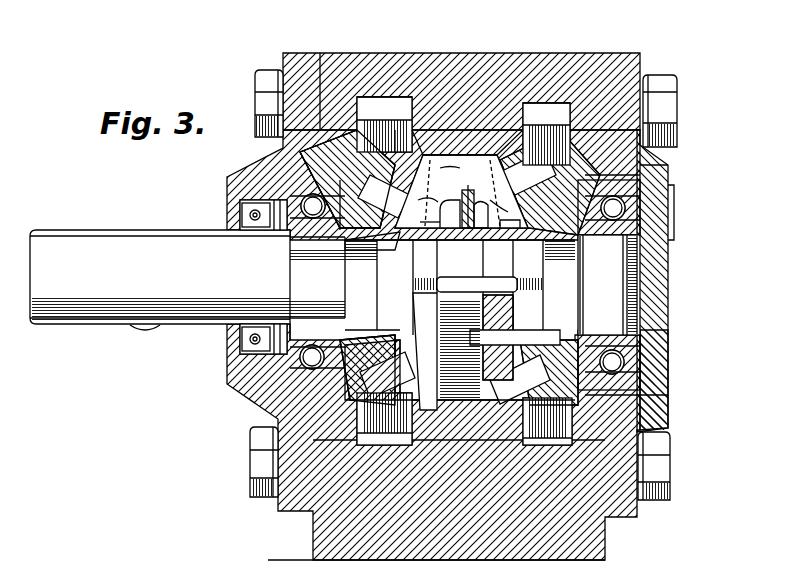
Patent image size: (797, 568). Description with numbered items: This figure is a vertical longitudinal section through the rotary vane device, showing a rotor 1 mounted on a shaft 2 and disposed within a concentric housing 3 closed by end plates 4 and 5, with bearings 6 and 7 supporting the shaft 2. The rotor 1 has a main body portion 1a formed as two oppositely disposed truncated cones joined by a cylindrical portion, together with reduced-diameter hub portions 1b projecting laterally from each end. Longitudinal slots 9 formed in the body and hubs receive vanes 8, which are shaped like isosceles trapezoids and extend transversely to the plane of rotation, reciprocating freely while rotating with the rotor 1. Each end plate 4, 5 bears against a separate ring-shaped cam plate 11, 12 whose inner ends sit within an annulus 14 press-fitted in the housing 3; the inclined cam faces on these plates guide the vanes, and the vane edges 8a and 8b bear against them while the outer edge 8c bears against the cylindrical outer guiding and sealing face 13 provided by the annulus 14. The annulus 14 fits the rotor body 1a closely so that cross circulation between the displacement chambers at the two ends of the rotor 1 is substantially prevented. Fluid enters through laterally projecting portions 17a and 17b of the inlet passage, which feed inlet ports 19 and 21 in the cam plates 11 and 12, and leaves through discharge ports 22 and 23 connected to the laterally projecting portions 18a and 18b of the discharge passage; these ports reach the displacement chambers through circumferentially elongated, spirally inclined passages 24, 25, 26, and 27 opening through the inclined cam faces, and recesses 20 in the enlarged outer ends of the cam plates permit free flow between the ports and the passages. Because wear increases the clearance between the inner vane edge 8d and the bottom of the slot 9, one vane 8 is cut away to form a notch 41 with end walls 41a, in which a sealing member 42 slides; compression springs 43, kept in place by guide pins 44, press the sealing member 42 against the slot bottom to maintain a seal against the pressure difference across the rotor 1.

The rotor 1 is at (560, 310).
The main body portion 1a is at (582, 276).
The hub portions 1b is at (640, 262).
The shaft 2 is at (105, 252).
The housing 3 is at (590, 70).
The end plate 4 is at (293, 92).
The end plate 5 is at (660, 140).
The bearing 6 is at (300, 205).
The bearing 7 is at (598, 232).
The vanes 8 is at (486, 343).
The guiding and sealing edge 8a is at (428, 191).
The guiding and sealing edge 8b is at (499, 200).
The outer guiding and sealing edge 8c is at (450, 170).
The inner edge 8d is at (425, 212).
The longitudinal slots 9 is at (362, 262).
The cam plate 11 is at (372, 130).
The cam plate 12 is at (540, 112).
The outer guiding and sealing face 13 is at (455, 150).
The annulus 14 is at (435, 140).
The laterally projecting portion of inlet passage 17a is at (365, 98).
The laterally projecting portion of inlet passage 17b is at (555, 465).
The laterally projecting portion of discharge passage 18a is at (370, 445).
The laterally projecting portion of discharge passage 18b is at (565, 105).
The inlet port 19 is at (300, 153).
The recess 20 is at (335, 135).
The inlet port 21 is at (560, 420).
The discharge port 22 is at (300, 380).
The discharge port 23 is at (640, 170).
The circumferentially elongated passage 24 is at (352, 240).
The circumferentially elongated passage 25 is at (600, 400).
The circumferentially elongated passage 26 is at (358, 348).
The circumferentially elongated passage 27 is at (616, 208).
The notch 41 is at (432, 228).
The end walls 41a is at (510, 219).
The sealing member 42 is at (463, 228).
The compression springs 43 is at (467, 200).
The guide pins 44 is at (484, 202).